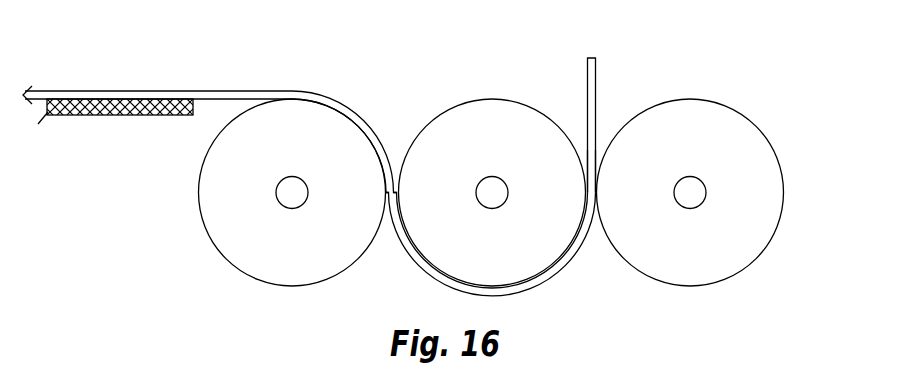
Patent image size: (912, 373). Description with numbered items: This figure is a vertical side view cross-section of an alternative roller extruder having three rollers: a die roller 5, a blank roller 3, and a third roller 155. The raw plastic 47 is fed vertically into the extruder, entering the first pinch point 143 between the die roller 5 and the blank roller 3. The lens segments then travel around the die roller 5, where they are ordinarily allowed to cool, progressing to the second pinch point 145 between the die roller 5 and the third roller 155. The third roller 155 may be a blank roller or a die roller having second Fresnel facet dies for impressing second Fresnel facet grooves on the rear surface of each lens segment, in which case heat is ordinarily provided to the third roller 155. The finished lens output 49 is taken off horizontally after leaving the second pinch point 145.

The finished lens output 49 is at (107, 91).
The raw plastic 47 is at (596, 96).
The third roller 155 is at (203, 227).
The die roller 5 is at (462, 102).
The blank roller 3 is at (763, 130).
The first pinch point 143 is at (596, 191).
The second pinch point 145 is at (386, 191).